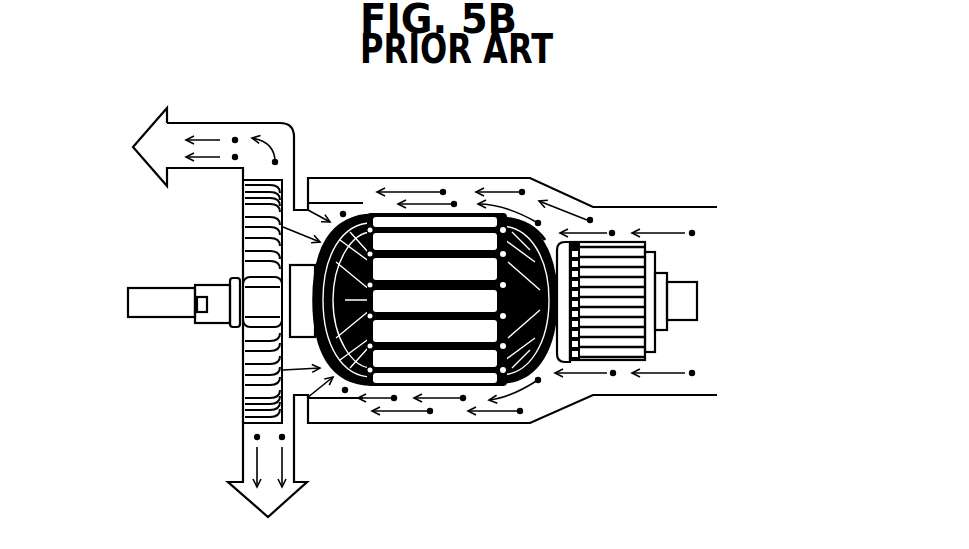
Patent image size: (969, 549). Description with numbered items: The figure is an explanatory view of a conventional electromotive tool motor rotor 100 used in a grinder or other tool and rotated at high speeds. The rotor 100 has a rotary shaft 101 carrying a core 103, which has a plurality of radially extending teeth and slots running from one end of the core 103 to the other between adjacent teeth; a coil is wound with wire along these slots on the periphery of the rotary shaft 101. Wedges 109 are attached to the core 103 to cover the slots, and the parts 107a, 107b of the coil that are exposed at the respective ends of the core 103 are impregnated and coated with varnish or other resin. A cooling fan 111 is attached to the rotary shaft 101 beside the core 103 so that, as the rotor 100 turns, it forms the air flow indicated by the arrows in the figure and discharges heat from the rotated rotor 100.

The motor rotor 100 is at (678, 279).
The rotary shaft 101 is at (163, 305).
The core 103 is at (473, 377).
The part of coil 107a is at (550, 242).
The part of coil 107b is at (347, 383).
The wedges 109 is at (525, 219).
The cooling fan 111 is at (253, 228).